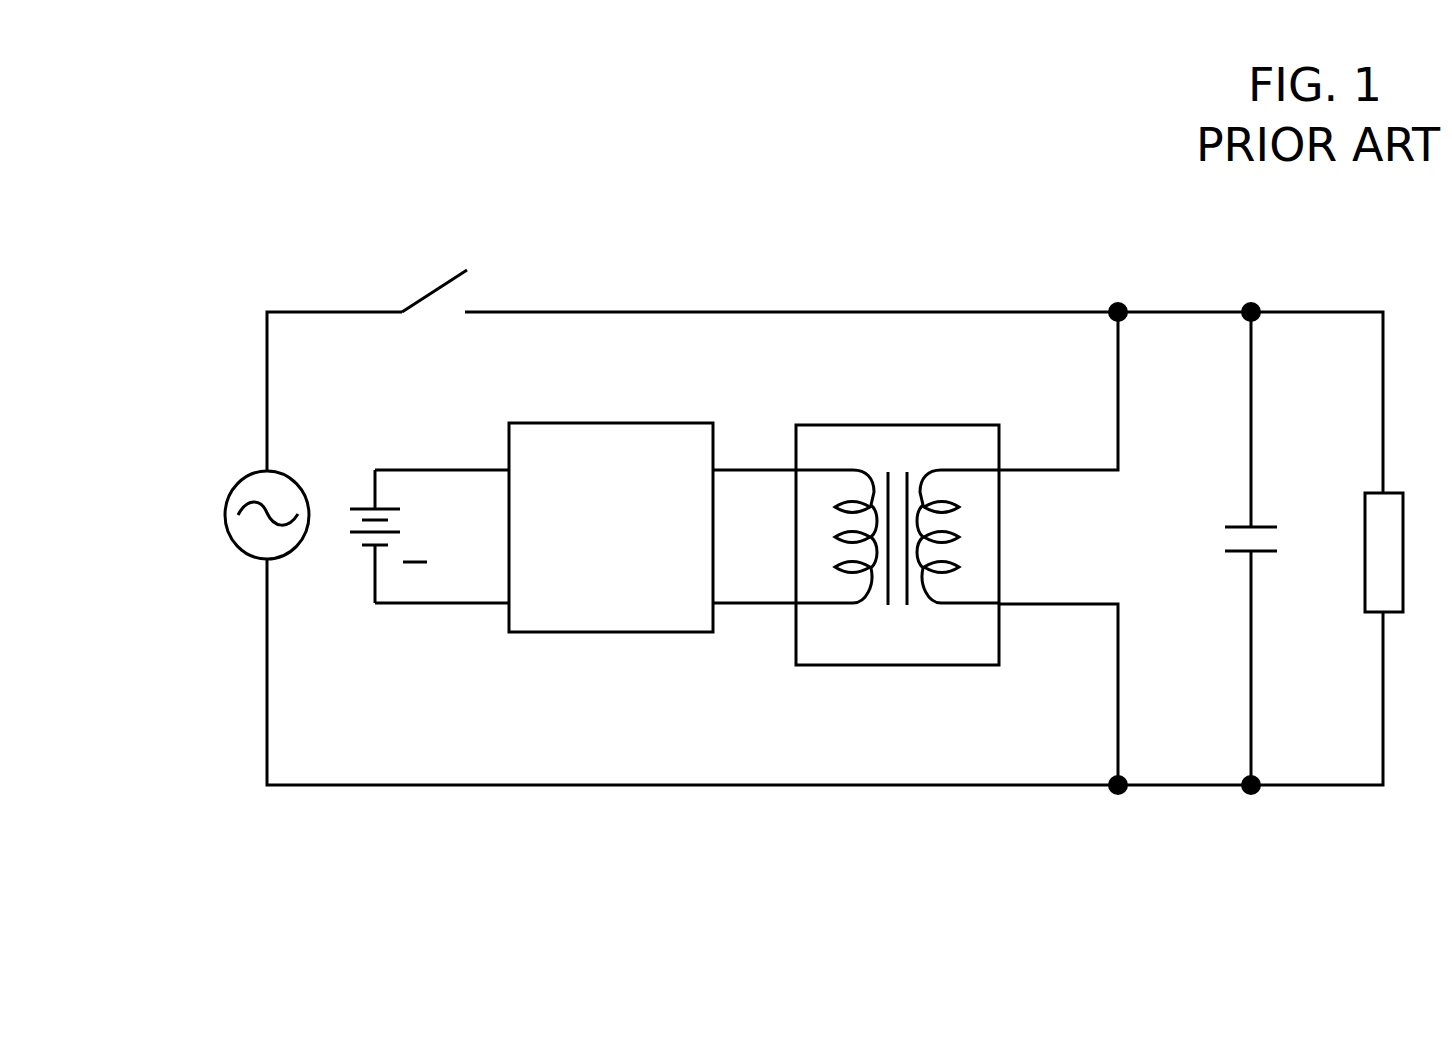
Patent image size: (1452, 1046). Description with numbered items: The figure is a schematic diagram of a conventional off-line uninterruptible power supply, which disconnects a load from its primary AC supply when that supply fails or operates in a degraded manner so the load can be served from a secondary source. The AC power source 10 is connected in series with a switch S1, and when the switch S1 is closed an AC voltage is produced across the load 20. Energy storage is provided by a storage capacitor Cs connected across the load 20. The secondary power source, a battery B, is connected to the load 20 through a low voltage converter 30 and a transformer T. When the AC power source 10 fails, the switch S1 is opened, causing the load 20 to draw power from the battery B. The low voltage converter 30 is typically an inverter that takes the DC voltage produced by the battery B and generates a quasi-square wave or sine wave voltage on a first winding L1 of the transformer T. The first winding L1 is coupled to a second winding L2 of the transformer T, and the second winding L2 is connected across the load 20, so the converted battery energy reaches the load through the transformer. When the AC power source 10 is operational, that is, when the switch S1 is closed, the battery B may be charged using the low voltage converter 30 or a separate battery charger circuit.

The switch S1 is at (500, 268).
The AC power source 10 is at (245, 553).
The battery B is at (370, 528).
The low voltage converter 30 is at (663, 633).
The transformer T is at (940, 665).
The first winding L1 is at (830, 496).
The second winding L2 is at (967, 496).
The storage capacitor Cs is at (1257, 538).
The load 20 is at (1405, 585).